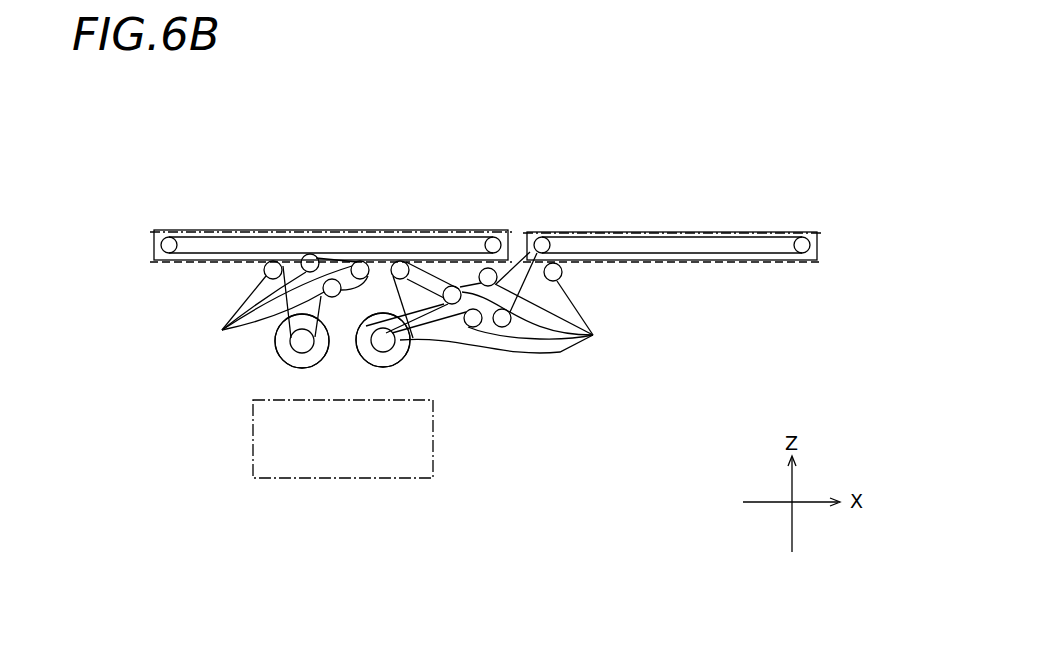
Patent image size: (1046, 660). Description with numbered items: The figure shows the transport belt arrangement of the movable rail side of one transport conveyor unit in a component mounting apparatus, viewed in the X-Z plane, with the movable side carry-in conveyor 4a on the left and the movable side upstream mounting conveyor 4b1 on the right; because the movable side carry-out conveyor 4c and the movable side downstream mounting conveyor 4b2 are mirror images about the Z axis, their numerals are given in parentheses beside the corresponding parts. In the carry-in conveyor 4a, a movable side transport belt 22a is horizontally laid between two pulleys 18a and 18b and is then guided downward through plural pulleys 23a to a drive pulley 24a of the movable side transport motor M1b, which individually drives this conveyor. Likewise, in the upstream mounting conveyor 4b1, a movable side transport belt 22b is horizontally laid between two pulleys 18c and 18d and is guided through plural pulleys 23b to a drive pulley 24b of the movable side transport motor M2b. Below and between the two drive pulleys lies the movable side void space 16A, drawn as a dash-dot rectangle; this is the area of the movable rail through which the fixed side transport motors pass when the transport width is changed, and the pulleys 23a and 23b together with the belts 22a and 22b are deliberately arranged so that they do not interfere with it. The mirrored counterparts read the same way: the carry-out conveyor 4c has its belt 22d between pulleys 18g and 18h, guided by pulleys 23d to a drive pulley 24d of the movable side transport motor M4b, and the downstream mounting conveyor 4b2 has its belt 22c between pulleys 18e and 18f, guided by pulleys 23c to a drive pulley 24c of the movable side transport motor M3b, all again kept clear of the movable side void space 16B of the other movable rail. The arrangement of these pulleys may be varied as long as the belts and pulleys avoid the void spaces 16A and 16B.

The movable side carry-in conveyor 4a is at (331, 174).
The movable side carry-out conveyor 4c is at (235, 231).
The movable side upstream mounting conveyor 4b1 is at (672, 172).
The movable side downstream mounting conveyor 4b2 is at (739, 232).
The pulley 18a is at (149, 192).
The pulley 18h is at (166, 239).
The pulley 18b is at (468, 177).
The pulley 18g is at (492, 239).
The pulley 18c is at (554, 181).
The pulley 18f is at (543, 239).
The pulley 18d is at (819, 192).
The pulley 18e is at (803, 239).
The movable side transport belt 22a is at (331, 191).
The movable side transport belt 22d is at (302, 236).
The movable side transport belt 22b is at (672, 192).
The movable side transport belt 22c is at (672, 236).
The pulleys 23a is at (263, 311).
The pulleys 23d is at (263, 311).
The pulleys 23b is at (510, 309).
The pulleys 23c is at (510, 309).
The drive pulley 24a is at (234, 366).
The drive pulley 24d is at (290, 341).
The drive pulley 24b is at (443, 356).
The drive pulley 24c is at (398, 345).
The movable side transport motor M1b is at (229, 397).
The movable side transport motor M4b is at (293, 368).
The movable side transport motor M2b is at (442, 385).
The movable side transport motor M3b is at (402, 362).
The movable side void space 16A is at (343, 486).
The movable side void space 16B is at (363, 478).